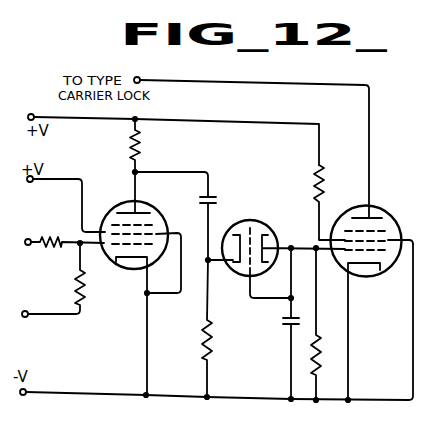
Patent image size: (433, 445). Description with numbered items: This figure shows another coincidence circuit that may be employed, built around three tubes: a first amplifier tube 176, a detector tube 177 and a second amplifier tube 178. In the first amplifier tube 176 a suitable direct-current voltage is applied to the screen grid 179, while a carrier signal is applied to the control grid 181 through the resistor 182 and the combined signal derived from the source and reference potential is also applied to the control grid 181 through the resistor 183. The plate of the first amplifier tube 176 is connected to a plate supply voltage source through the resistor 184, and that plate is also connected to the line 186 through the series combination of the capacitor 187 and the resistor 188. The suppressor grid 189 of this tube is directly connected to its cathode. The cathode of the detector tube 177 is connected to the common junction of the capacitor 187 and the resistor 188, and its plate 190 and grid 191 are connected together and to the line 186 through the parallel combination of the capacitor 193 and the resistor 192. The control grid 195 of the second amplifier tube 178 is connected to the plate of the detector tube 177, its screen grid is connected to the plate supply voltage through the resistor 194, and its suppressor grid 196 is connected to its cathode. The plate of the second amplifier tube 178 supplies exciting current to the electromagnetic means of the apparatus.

The first amplifier tube 176 is at (147, 207).
The detector tube 177 is at (256, 216).
The second amplifier tube 178 is at (372, 210).
The screen grid 179 is at (113, 212).
The control grid 181 is at (111, 262).
The resistor 182 is at (56, 238).
The resistor 183 is at (77, 281).
The resistor 184 is at (146, 148).
The line 186 is at (186, 397).
The capacitor 187 is at (212, 197).
The resistor 188 is at (203, 331).
The suppressor grid 189 is at (167, 222).
The plate 190 is at (266, 240).
The grid 191 is at (249, 270).
The resistor 192 is at (318, 338).
The capacitor 193 is at (289, 323).
The resistor 194 is at (322, 172).
The control grid 195 is at (382, 258).
The suppressor grid 196 is at (385, 231).